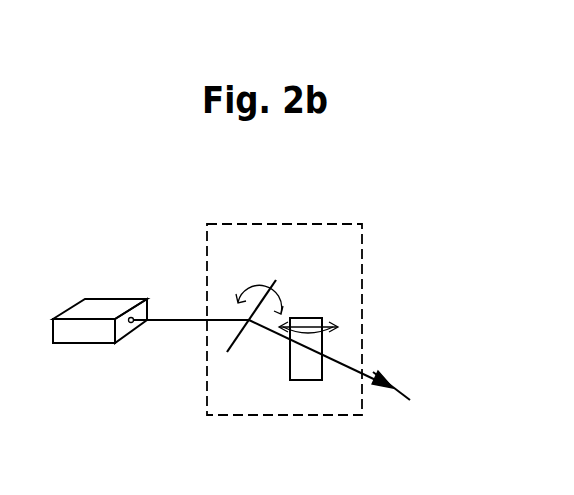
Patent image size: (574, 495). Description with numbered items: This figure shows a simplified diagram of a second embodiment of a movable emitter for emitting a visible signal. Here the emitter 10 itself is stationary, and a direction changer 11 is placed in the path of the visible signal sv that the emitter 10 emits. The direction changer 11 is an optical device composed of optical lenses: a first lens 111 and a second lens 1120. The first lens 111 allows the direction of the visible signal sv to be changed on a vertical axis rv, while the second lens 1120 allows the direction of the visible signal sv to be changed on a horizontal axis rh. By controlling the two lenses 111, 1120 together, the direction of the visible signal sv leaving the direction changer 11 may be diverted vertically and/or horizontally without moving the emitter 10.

The emitter 10 is at (103, 303).
The direction changer 11 is at (349, 256).
The first lens 111 is at (271, 403).
The second lens 1120 is at (303, 373).
The vertical axis rv is at (259, 287).
The horizontal axis rh is at (315, 315).
The visible signal sv is at (400, 391).